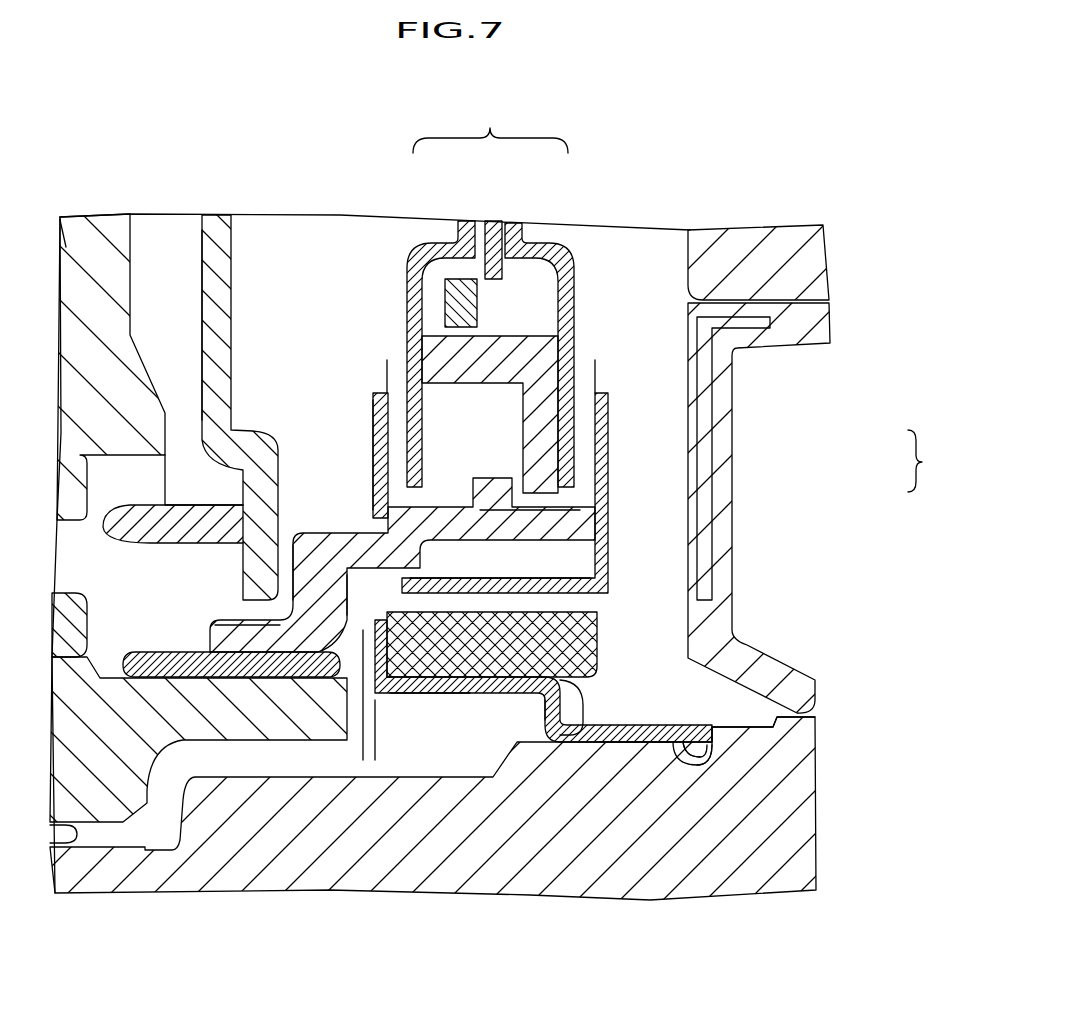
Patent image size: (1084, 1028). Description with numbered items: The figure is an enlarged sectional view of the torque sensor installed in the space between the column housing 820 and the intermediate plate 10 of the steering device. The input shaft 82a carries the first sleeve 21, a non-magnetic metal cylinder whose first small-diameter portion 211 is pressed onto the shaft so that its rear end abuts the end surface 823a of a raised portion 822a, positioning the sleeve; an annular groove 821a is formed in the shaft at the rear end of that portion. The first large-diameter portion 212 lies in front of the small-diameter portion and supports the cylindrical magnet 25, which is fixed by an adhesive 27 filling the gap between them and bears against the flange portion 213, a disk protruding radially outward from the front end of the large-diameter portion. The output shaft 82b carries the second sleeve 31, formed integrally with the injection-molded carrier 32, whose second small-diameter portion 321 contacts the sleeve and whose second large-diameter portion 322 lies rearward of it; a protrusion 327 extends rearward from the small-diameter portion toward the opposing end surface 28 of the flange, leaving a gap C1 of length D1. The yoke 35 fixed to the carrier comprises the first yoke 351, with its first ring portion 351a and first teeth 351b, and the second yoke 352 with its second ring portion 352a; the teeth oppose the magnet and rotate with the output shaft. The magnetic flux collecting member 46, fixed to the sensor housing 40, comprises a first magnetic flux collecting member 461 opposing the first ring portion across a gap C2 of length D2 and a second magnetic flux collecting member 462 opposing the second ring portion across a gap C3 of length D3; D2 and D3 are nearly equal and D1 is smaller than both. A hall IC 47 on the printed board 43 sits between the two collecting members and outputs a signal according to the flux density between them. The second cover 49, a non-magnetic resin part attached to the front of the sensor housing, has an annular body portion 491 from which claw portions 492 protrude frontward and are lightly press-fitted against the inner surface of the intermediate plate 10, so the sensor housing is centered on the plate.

The intermediate plate 10 is at (93, 243).
The second cover 49 is at (243, 280).
The body portion 491 is at (213, 278).
The claw portions 492 is at (185, 522).
The magnetic flux collecting member 46 is at (490, 294).
The second magnetic flux collecting member 462 is at (440, 243).
The first magnetic flux collecting member 461 is at (538, 243).
The hall IC 47 is at (485, 272).
The printed board 43 is at (458, 305).
The sensor housing 40 is at (540, 347).
The second yoke 352 is at (393, 437).
The second ring portion 352a is at (373, 437).
The first yoke 351 is at (613, 470).
The first ring portion 351a is at (695, 533).
The first teeth 351b is at (537, 577).
The yoke 35 is at (929, 461).
The opposing end surface 28 is at (303, 533).
The second sleeve 31 is at (233, 650).
The second small-diameter portion 321 is at (295, 645).
The protrusion 327 is at (335, 640).
The second large-diameter portion 322 is at (470, 527).
The carrier 32 is at (158, 660).
The magnet 25 is at (565, 632).
The first large-diameter portion 212 is at (520, 693).
The flange portion 213 is at (433, 693).
The adhesive 27 is at (563, 685).
The first small-diameter portion 211 is at (647, 742).
The annular groove 821a is at (695, 740).
The end surface 823a is at (705, 757).
The raised portion 822a is at (730, 733).
The column housing 820 is at (727, 250).
The first sleeve 21 is at (650, 710).
The input shaft 82a is at (793, 792).
The output shaft 82b is at (102, 723).
The length of gap C1 D1 is at (340, 752).
The length of gap C2 D2 is at (576, 363).
The length of gap C3 D3 is at (406, 363).
The gap C1 is at (368, 617).
The gap C2 is at (585, 408).
The gap C3 is at (398, 408).